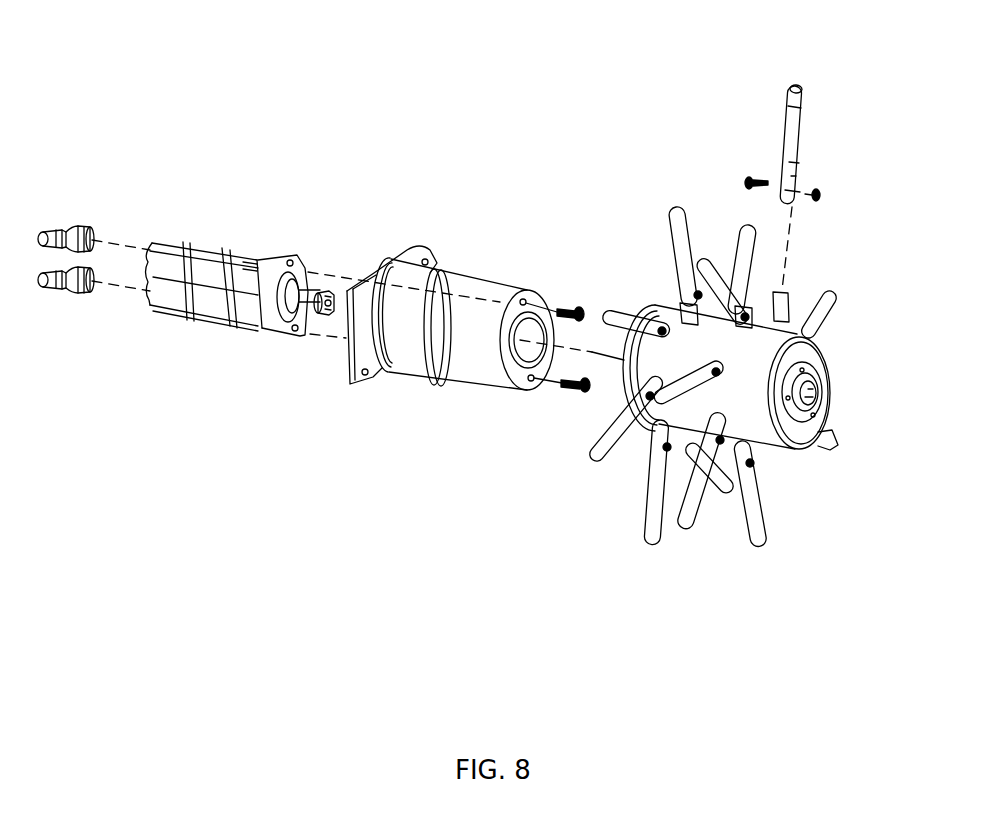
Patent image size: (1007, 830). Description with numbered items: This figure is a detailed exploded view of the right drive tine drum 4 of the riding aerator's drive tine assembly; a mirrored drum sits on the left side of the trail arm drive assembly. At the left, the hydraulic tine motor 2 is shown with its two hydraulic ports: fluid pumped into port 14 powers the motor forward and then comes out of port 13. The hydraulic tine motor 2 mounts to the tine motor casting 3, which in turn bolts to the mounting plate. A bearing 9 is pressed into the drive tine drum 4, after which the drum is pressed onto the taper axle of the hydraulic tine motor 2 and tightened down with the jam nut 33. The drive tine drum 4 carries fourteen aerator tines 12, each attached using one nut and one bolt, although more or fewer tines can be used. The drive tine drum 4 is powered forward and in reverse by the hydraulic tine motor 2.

The hydraulic tine motor 2 is at (212, 212).
The tine motor casting 3 is at (316, 380).
The drive tine drum 4 is at (861, 394).
The bearing 9 is at (442, 420).
The aerator tines 12 is at (755, 118).
The port 13 is at (37, 200).
The port 14 is at (63, 312).
The jam nut 33 is at (321, 258).